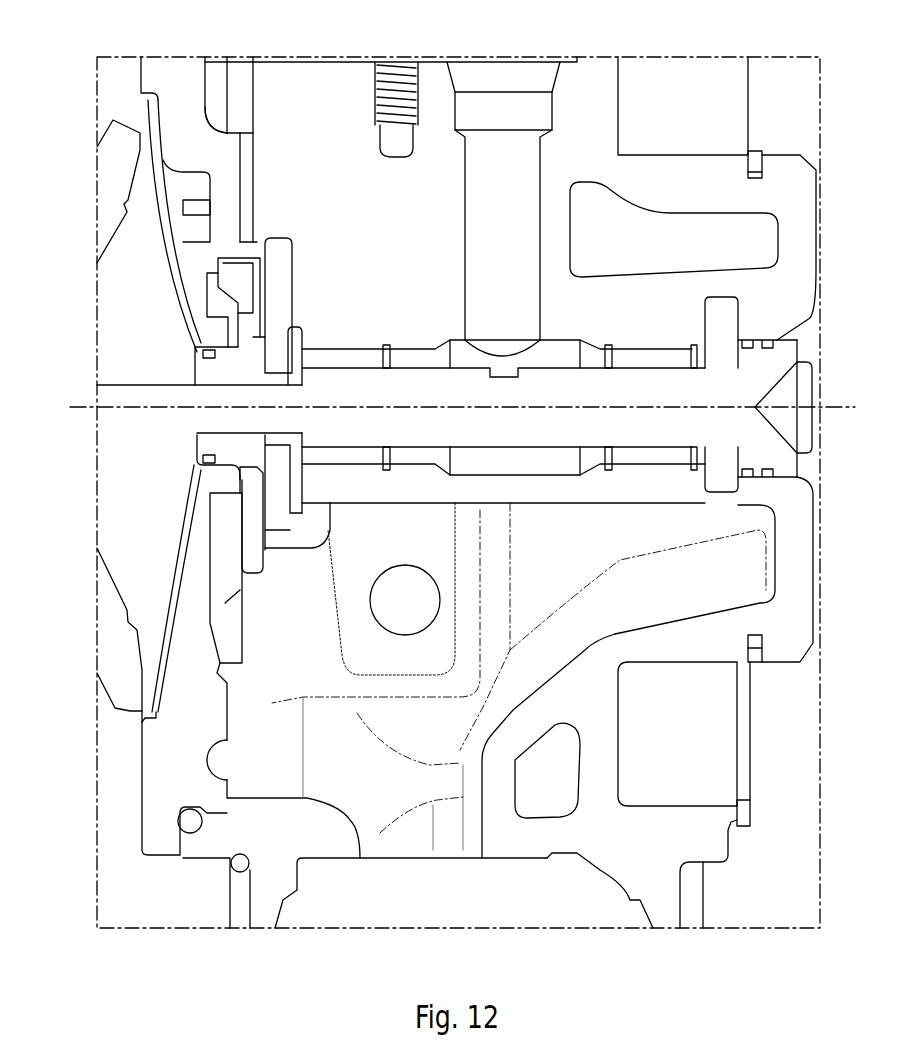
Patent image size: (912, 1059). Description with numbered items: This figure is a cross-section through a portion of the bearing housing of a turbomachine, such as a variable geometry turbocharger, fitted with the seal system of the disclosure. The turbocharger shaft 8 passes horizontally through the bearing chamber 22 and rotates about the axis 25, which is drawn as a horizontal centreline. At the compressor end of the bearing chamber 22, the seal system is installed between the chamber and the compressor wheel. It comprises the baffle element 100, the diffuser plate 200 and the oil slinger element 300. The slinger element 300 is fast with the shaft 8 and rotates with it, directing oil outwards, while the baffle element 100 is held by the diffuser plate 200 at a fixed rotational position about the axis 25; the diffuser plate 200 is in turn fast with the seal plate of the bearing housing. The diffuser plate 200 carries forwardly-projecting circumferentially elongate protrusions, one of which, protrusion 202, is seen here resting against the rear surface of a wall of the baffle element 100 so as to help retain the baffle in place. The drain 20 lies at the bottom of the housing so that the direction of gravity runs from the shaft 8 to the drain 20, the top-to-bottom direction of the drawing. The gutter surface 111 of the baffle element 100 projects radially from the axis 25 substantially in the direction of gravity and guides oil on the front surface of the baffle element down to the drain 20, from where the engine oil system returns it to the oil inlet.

The turbocharger shaft 8 is at (760, 452).
The drain 20 is at (420, 855).
The bearing chamber 22 is at (482, 688).
The axis 25 is at (88, 405).
The baffle element 100 is at (248, 243).
The gutter surface 111 is at (242, 527).
The diffuser plate 200 is at (197, 257).
The circumferentially elongate protrusion 202 is at (242, 187).
The oil slinger element 300 is at (227, 372).